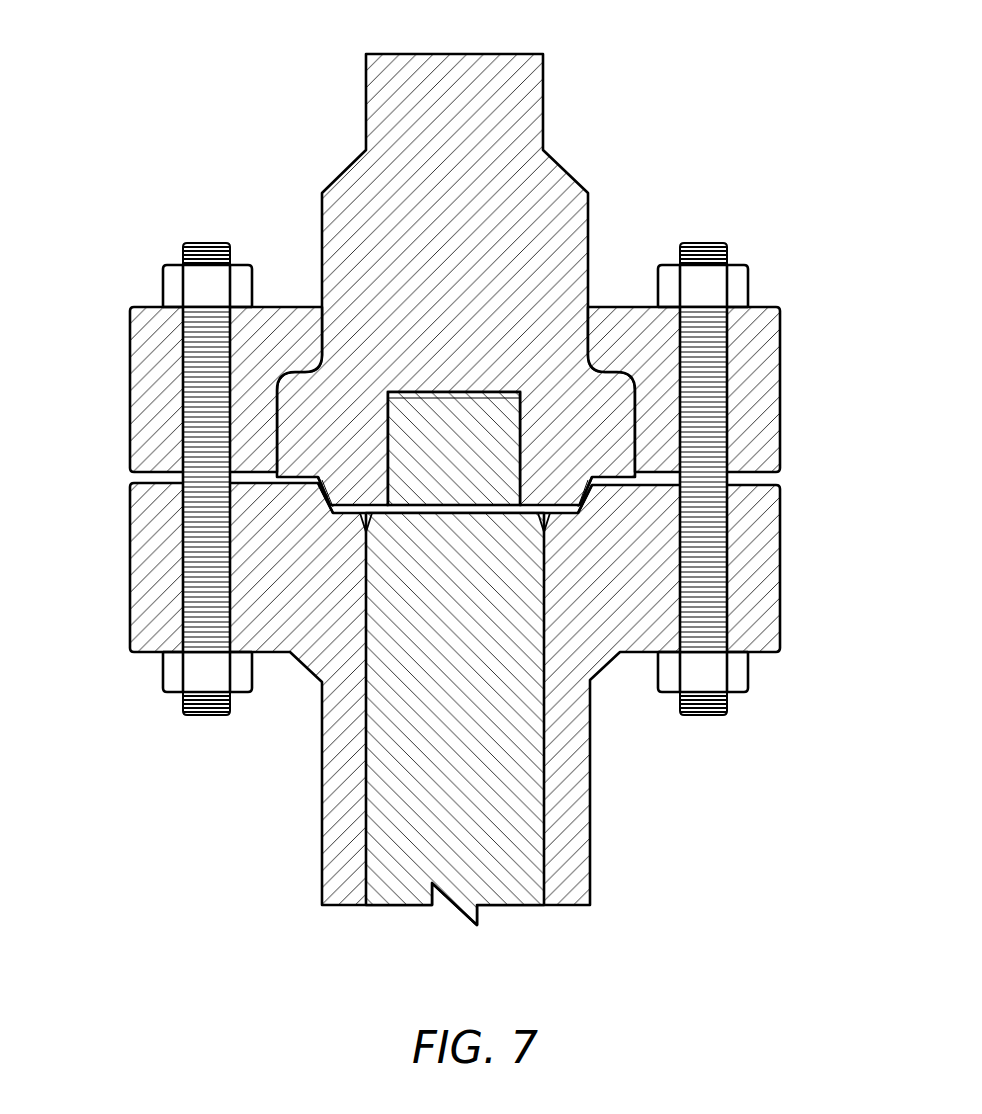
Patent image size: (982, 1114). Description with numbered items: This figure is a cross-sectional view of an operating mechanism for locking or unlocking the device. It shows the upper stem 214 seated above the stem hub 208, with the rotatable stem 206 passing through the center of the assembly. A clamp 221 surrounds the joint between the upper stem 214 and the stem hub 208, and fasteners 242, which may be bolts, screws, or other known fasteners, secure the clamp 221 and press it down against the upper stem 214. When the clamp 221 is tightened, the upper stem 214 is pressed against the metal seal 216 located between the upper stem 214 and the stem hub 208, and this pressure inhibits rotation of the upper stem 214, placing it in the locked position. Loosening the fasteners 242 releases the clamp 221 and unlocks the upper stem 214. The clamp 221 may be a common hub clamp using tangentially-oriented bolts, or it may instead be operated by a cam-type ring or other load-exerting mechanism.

The rotatable stem 206 is at (510, 880).
The stem hub 208 is at (328, 842).
The upper stem 214 is at (536, 121).
The metal seal 216 is at (330, 513).
The clamp 221 is at (147, 398).
The fasteners 242 is at (150, 246).